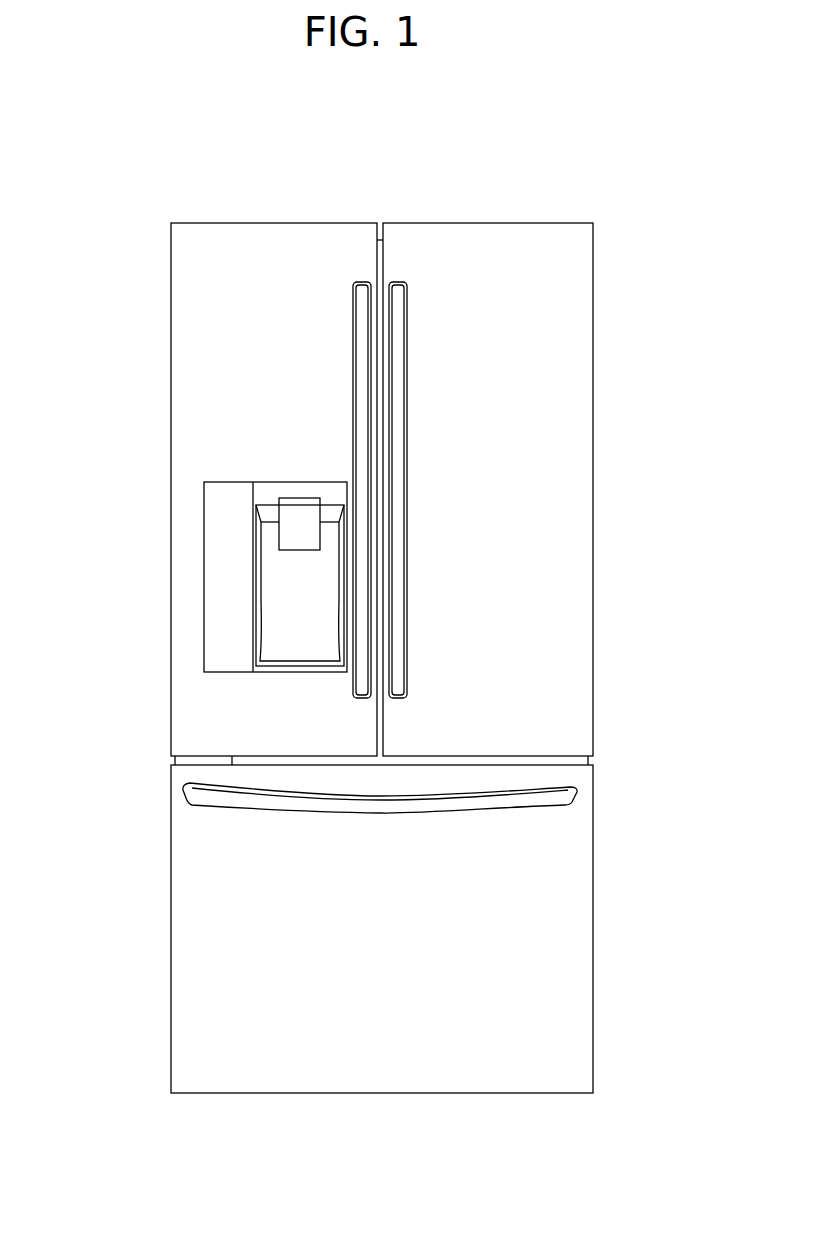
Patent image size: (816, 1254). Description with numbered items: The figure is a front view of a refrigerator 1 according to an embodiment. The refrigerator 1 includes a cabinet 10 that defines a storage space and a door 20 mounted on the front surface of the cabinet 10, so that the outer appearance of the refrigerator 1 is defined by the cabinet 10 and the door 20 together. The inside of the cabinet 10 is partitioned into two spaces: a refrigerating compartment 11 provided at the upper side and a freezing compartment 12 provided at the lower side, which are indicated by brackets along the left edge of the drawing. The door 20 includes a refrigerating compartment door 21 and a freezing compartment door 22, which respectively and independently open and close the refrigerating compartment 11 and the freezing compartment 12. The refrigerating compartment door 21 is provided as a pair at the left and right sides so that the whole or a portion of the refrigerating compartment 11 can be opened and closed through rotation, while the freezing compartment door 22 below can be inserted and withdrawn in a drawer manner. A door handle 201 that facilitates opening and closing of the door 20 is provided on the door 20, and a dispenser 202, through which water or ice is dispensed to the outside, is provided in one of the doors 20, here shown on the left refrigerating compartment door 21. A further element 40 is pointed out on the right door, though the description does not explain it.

The refrigerator 1 is at (396, 577).
The cabinet 10 is at (88, 940).
The refrigerating compartment 11 is at (156, 223).
The freezing compartment 12 is at (155, 772).
The door 20 is at (464, 622).
The refrigerating compartment door 21 is at (439, 453).
The freezing compartment door 22 is at (433, 924).
The door panel 40 is at (600, 423).
The door handle 201 is at (351, 275).
The dispenser 202 is at (236, 476).